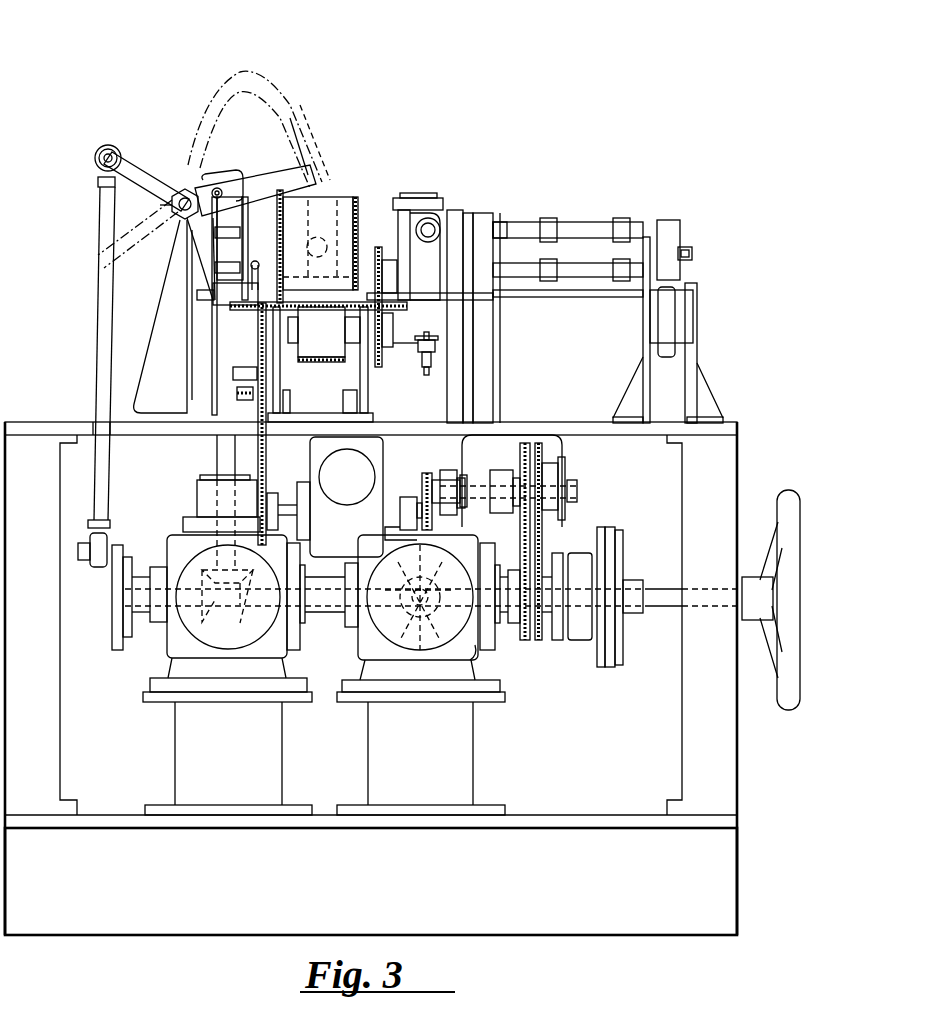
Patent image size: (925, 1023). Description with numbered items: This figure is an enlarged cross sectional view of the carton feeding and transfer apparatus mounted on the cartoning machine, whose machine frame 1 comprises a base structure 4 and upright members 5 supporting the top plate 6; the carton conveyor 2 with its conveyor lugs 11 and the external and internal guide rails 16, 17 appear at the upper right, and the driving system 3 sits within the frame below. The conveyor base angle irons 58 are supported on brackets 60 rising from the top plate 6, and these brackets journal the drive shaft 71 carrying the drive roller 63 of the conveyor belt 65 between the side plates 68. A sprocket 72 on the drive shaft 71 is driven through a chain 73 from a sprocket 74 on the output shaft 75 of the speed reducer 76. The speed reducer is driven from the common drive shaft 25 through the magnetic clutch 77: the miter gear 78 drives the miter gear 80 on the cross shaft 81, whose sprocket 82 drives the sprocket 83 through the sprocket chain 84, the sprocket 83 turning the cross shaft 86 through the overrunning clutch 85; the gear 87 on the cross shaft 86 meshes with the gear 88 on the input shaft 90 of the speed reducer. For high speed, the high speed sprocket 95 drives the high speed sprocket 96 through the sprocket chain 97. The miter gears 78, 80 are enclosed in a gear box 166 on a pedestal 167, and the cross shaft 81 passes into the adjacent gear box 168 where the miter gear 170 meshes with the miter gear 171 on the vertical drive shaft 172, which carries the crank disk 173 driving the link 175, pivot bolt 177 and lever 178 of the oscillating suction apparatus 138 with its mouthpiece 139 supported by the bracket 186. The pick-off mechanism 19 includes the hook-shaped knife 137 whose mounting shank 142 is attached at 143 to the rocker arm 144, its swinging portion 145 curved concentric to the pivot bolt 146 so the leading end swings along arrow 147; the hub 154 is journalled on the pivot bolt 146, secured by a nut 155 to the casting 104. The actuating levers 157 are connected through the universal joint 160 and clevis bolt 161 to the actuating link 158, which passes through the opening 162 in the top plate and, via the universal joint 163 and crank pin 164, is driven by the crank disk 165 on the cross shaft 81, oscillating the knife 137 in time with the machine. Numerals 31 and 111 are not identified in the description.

The machine frame 1 is at (98, 910).
The carton conveyor 2 is at (628, 162).
The driving system 3 is at (104, 605).
The base structure 4 is at (612, 915).
The upright members 5 is at (52, 779).
The top plate 6 is at (728, 428).
The conveyor lugs 11 is at (552, 222).
The external guide rail 16 is at (505, 230).
The internal guide rail 17 is at (590, 222).
The pick-off mechanism 19 is at (172, 98).
The common drive shaft 25 is at (420, 612).
The cap 31 is at (430, 198).
The angle irons 58 is at (395, 313).
The brackets 60 is at (368, 380).
The drive roller 63 is at (318, 356).
The conveyor belt 65 is at (333, 360).
The side plates 68 is at (290, 232).
The drive shaft 71 is at (393, 330).
The sprocket 72 is at (257, 333).
The chain 73 is at (238, 400).
The sprocket 74 is at (270, 500).
The output shaft 75 is at (290, 508).
The speed reducer 76 is at (340, 546).
The magnetic clutch 77 is at (580, 640).
The miter gear 78 is at (378, 628).
The miter gear 80 is at (436, 570).
The cross shaft 81 is at (658, 598).
The sprocket 82 is at (512, 625).
The sprocket 83 is at (518, 466).
The sprocket chain 84 is at (520, 526).
The overrunning clutch 85 is at (490, 478).
The cross shaft 86 is at (578, 492).
The gear 87 is at (426, 473).
The gear 88 is at (420, 526).
The input shaft 90 is at (408, 505).
The high speed sprocket 95 is at (550, 642).
The high speed sprocket 96 is at (550, 470).
The sprocket chain 97 is at (543, 540).
The casting 104 is at (152, 344).
The bearing housing 111 is at (432, 238).
The oscillating finger or knife 137 is at (250, 62).
The oscillating suction apparatus 138 is at (478, 208).
The suction mouthpiece 139 is at (316, 200).
The mounting shank 142 is at (276, 176).
The attachment 143 is at (220, 186).
The rocker arm 144 is at (203, 222).
The swinging portion 145 is at (292, 104).
The pivot bolt 146 is at (167, 204).
The arrow 147 is at (312, 176).
The hub 154 is at (118, 262).
The nut 155 is at (176, 188).
The actuating levers 157 is at (140, 158).
The actuating link 158 is at (96, 348).
The universal joint 160 is at (98, 158).
The clevis bolt 161 is at (104, 147).
The opening 162 is at (84, 432).
The universal joint 163 is at (95, 540).
The crank pin 164 is at (78, 553).
The crank disk 165 is at (118, 592).
The gear box 166 is at (475, 652).
The pedestal 167 is at (180, 750).
The gear box 168 is at (178, 650).
The miter gear 170 is at (212, 612).
The miter gear 171 is at (240, 595).
The vertical drive shaft 172 is at (225, 464).
The crank disk 173 is at (240, 370).
The link 175 is at (424, 368).
The pivot bolt 177 is at (430, 375).
The lever 178 is at (440, 338).
The bracket 186 is at (485, 368).